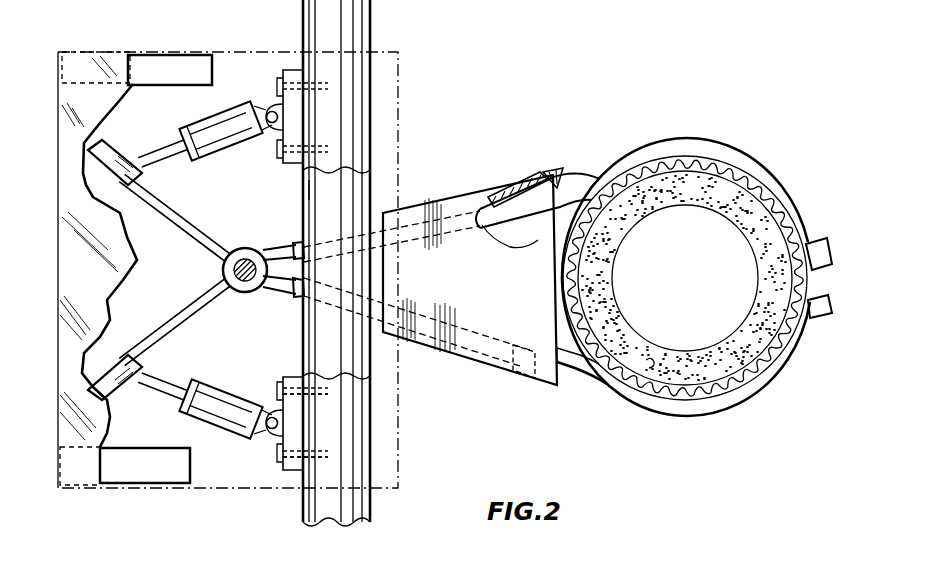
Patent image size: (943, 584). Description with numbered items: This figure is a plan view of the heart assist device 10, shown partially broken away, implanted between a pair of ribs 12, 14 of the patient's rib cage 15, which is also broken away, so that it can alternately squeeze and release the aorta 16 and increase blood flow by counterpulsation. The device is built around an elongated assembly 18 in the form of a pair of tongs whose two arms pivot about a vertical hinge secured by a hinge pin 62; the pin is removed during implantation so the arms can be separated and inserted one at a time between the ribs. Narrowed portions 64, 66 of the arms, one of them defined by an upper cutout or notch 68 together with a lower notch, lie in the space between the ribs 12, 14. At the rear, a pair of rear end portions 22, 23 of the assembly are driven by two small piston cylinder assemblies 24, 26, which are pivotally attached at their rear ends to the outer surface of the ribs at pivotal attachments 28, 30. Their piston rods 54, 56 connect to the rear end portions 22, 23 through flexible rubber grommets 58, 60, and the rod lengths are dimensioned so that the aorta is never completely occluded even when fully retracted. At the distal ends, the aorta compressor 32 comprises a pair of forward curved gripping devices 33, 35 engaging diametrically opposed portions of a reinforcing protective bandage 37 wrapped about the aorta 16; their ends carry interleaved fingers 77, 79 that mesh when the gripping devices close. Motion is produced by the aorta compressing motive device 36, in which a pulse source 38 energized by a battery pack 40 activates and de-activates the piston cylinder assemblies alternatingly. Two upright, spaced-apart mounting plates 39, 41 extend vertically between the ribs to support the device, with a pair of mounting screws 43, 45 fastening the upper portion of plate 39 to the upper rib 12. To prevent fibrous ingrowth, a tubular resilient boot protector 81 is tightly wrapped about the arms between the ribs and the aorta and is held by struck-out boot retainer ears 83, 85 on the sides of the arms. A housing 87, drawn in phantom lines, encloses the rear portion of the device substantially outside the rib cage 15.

The heart assist device 10 is at (108, 498).
The rib 12 is at (313, 13).
The rib 14 is at (310, 190).
The rib cage 15 is at (287, 498).
The aorta 16 is at (652, 366).
The elongated assembly 18 is at (482, 367).
The rear end portion 22 is at (103, 407).
The rear end portion 23 is at (103, 140).
The piston cylinder assembly 24 is at (213, 392).
The piston cylinder assembly 26 is at (193, 127).
The pivotal attachment 28 is at (268, 433).
The pivotal attachment 30 is at (272, 110).
The aorta compressor 32 is at (600, 394).
The curved gripping device 33 is at (657, 405).
The curved gripping device 35 is at (673, 128).
The aorta compressing motive device 36 is at (178, 50).
The reinforcing protective bandage 37 is at (628, 180).
The pulse source 38 is at (136, 52).
The mounting plate 39 is at (293, 442).
The battery pack 40 is at (153, 480).
The mounting plate 41 is at (298, 122).
The mounting screw 43 is at (259, 382).
The mounting screw 45 is at (278, 457).
The piston rod 54 is at (165, 360).
The piston rod 56 is at (175, 156).
The flexible rubber grommet 58 is at (122, 352).
The flexible rubber grommet 60 is at (172, 202).
The hinge pin 62 is at (226, 264).
The narrowed portion 64 is at (297, 292).
The narrowed portion 66 is at (297, 247).
The cutout or notch 68 is at (385, 308).
The interleaved finger 77 is at (810, 320).
The interleaved finger 79 is at (824, 244).
The tubular resilient boot protector 81 is at (453, 253).
The boot retainer ear 83 is at (521, 372).
The boot retainer ear 85 is at (537, 176).
The housing 87 is at (80, 93).